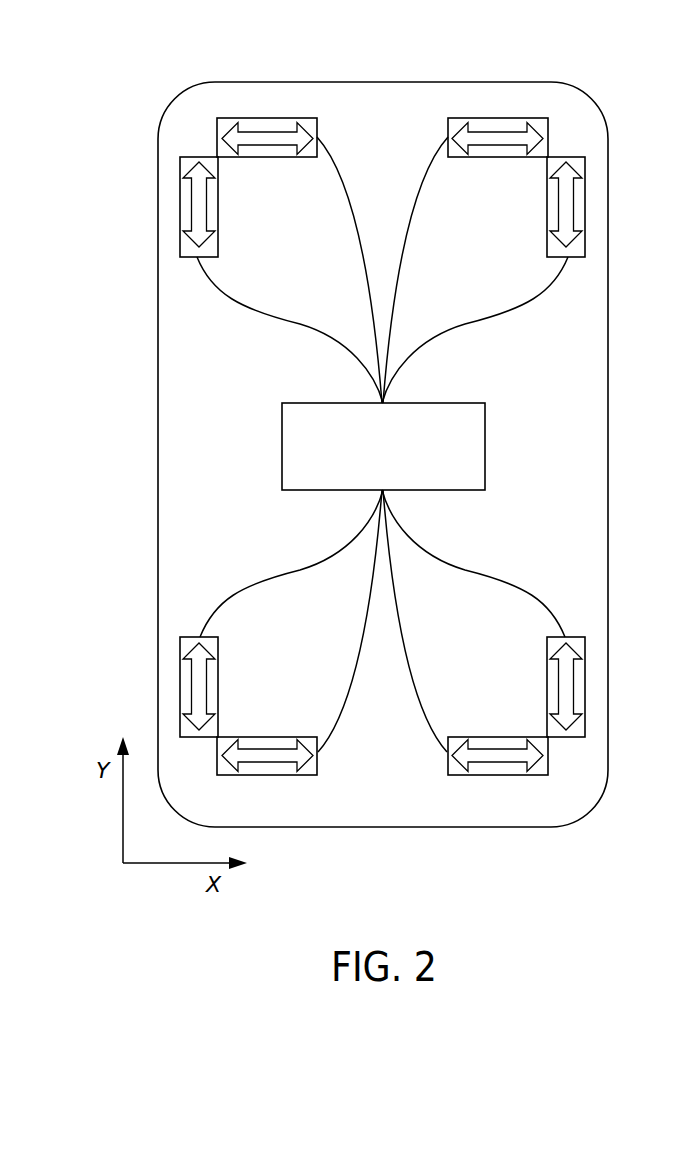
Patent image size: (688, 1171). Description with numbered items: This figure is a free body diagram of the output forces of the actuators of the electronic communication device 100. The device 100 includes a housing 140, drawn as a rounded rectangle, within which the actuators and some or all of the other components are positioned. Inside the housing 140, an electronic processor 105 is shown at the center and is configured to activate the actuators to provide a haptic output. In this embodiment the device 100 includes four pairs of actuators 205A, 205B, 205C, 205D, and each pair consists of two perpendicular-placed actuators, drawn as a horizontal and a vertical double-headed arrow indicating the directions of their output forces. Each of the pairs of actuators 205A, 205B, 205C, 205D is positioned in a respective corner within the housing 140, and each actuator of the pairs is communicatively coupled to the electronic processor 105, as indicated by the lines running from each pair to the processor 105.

The electronic communication device 100 is at (108, 56).
The housing 140 is at (158, 453).
The electronic processor 105 is at (282, 448).
The pair of actuators 205A is at (235, 172).
The pair of actuators 205B is at (528, 172).
The pair of actuators 205C is at (235, 722).
The pair of actuators 205D is at (527, 720).